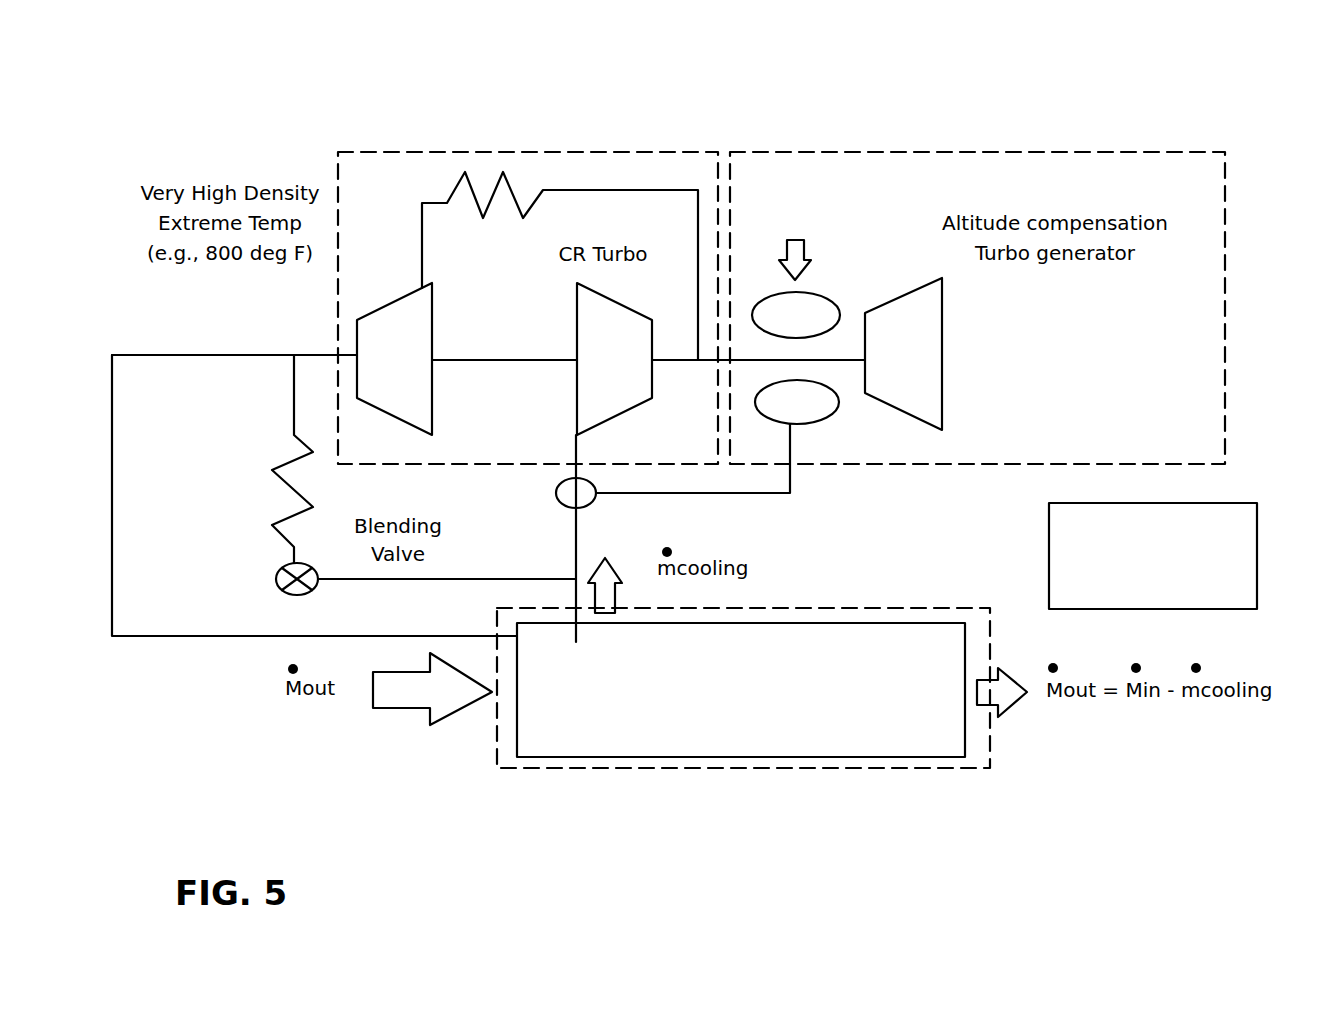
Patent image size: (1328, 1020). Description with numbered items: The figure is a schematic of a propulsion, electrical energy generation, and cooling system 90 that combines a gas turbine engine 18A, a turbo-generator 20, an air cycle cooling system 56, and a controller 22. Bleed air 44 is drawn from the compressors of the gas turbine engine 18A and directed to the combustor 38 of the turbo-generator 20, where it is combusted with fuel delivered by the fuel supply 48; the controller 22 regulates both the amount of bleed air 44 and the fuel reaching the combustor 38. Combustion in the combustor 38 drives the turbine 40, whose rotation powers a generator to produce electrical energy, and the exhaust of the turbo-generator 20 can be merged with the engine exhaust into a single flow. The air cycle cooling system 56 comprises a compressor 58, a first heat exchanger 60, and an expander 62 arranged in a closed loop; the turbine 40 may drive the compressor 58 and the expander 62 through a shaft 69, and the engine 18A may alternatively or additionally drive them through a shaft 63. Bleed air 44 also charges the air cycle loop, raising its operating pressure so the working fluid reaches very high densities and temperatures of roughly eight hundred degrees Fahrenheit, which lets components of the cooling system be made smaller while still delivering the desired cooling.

The gas turbine engine 18A is at (858, 608).
The turbo-generator 20 is at (918, 152).
The controller 22 is at (1153, 556).
The combustor 38 is at (823, 415).
The turbine 40 is at (945, 387).
The bleed air 44 is at (573, 552).
The fuel supply 48 is at (787, 180).
The air cycle cooling system 56 is at (548, 152).
The compressor 58 is at (572, 322).
The first heat exchanger 60 is at (465, 172).
The expander 62 is at (355, 330).
The shaft 63 is at (157, 636).
The shaft 69 is at (741, 359).
The propulsion, electrical energy generation, and cooling system 90 is at (1210, 94).